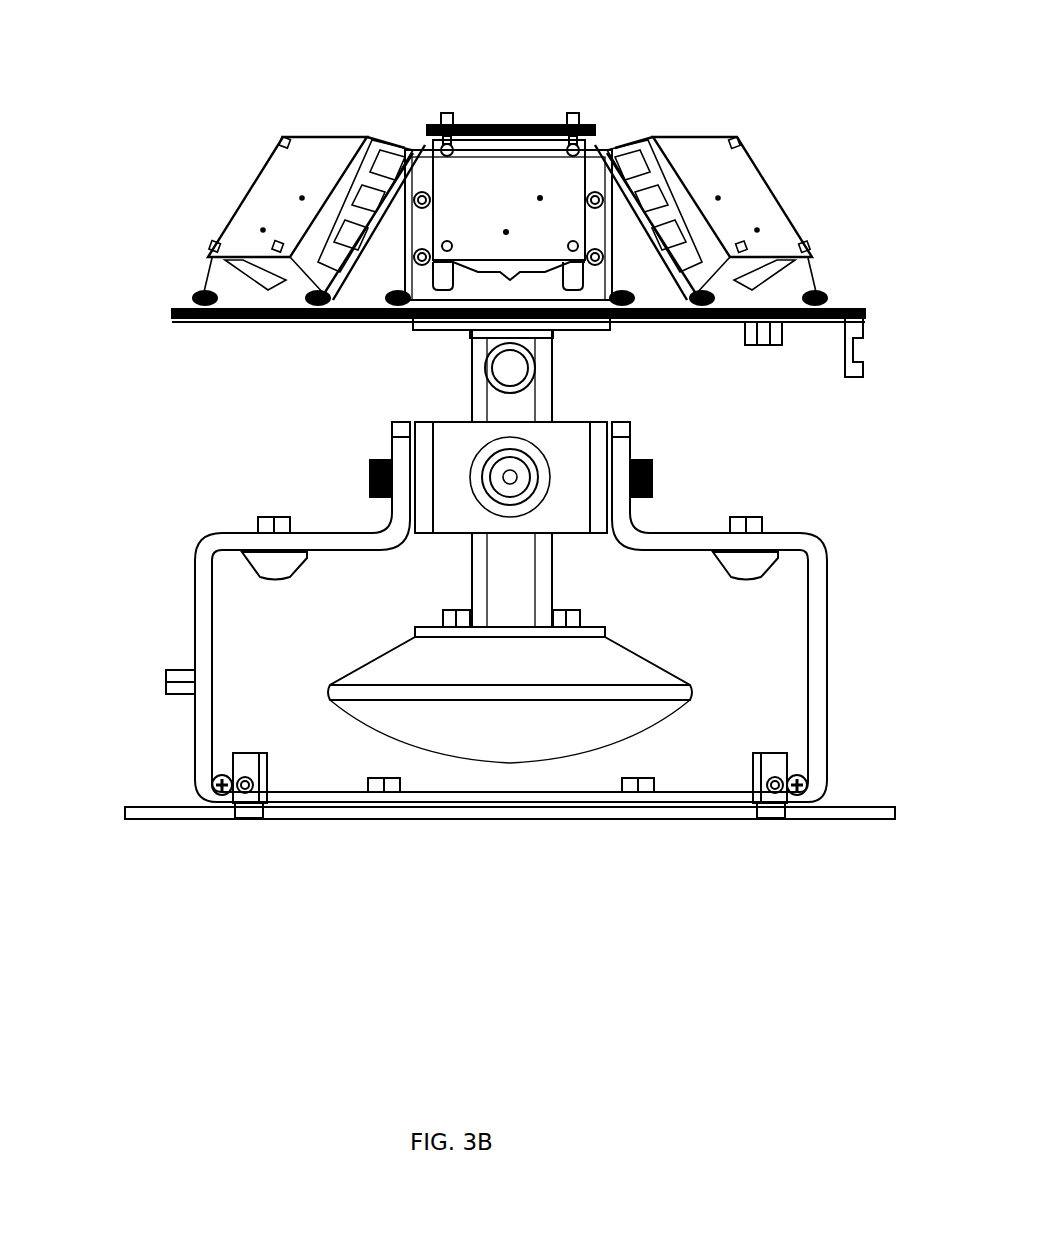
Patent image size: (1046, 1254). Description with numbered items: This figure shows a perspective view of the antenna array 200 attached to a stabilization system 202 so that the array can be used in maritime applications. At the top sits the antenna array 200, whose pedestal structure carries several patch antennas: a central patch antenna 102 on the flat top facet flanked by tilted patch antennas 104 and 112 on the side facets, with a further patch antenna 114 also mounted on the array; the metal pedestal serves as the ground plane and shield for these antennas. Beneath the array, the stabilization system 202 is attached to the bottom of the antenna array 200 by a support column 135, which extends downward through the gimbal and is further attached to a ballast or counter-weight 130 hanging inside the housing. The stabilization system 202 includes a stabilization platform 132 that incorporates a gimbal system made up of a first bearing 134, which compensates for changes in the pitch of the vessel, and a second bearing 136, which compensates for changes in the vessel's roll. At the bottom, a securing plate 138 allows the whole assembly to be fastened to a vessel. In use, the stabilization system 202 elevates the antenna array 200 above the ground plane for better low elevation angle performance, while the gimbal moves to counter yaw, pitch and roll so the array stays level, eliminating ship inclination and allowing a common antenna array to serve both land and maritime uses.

The patch antenna 114 is at (537, 123).
The antenna array 200 is at (282, 148).
The patch antenna 104 is at (268, 190).
The patch antenna 112 is at (757, 205).
The patch antenna 102 is at (513, 222).
The support column 135 is at (483, 366).
The first bearing 134 is at (368, 462).
The second bearing 136 is at (533, 467).
The stabilization system 202 is at (826, 475).
The stabilization platform 132 is at (822, 685).
The ballast/counter-weight 130 is at (562, 722).
The securing plate 138 is at (160, 810).